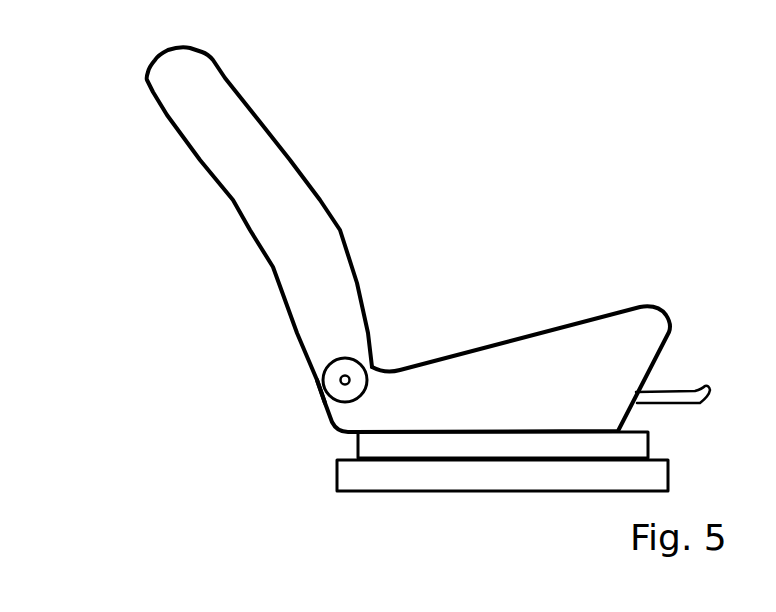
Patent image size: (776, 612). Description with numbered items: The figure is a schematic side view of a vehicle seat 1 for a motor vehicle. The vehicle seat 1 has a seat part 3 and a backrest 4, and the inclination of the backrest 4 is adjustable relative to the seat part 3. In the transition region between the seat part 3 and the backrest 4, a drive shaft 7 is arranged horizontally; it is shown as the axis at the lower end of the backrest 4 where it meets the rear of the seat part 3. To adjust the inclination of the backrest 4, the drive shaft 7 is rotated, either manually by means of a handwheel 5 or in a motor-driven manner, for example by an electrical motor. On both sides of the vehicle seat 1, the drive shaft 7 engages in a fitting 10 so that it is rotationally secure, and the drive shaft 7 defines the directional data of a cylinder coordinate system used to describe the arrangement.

The vehicle seat 1 is at (388, 172).
The seat part 3 is at (525, 352).
The backrest 4 is at (242, 143).
The handwheel 5 is at (374, 364).
The drive shaft 7 is at (342, 383).
The fitting 10 is at (312, 386).